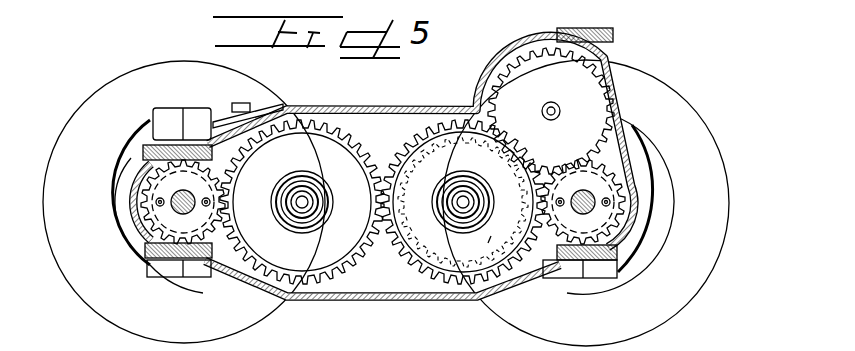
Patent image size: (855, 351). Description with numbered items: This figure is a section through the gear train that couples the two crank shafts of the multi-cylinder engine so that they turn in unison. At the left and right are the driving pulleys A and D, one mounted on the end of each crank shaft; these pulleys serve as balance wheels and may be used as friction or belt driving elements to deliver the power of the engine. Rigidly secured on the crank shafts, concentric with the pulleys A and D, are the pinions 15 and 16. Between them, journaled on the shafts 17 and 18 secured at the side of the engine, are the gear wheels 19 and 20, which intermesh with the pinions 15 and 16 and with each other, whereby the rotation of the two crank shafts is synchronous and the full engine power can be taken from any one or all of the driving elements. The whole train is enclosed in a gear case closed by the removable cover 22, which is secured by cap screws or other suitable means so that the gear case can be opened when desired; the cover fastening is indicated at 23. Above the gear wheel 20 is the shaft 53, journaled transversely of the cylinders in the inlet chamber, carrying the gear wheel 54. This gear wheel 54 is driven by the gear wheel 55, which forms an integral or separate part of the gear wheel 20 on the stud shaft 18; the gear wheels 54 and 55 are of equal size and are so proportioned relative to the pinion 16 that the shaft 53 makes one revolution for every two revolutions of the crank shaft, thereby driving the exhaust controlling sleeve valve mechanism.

The pinion 15 is at (168, 218).
The pinion 16 is at (600, 222).
The shaft 17 is at (304, 198).
The shaft 18 is at (463, 198).
The gear wheel 19 is at (327, 250).
The gear wheel 20 is at (458, 268).
The removable cover 22 is at (253, 117).
The bolt 23 is at (238, 106).
The shaft 53 is at (549, 104).
The gear wheel 54 is at (603, 97).
The gear wheel 55 is at (490, 240).
The driving pulley A is at (80, 255).
The driving pulley D is at (698, 233).